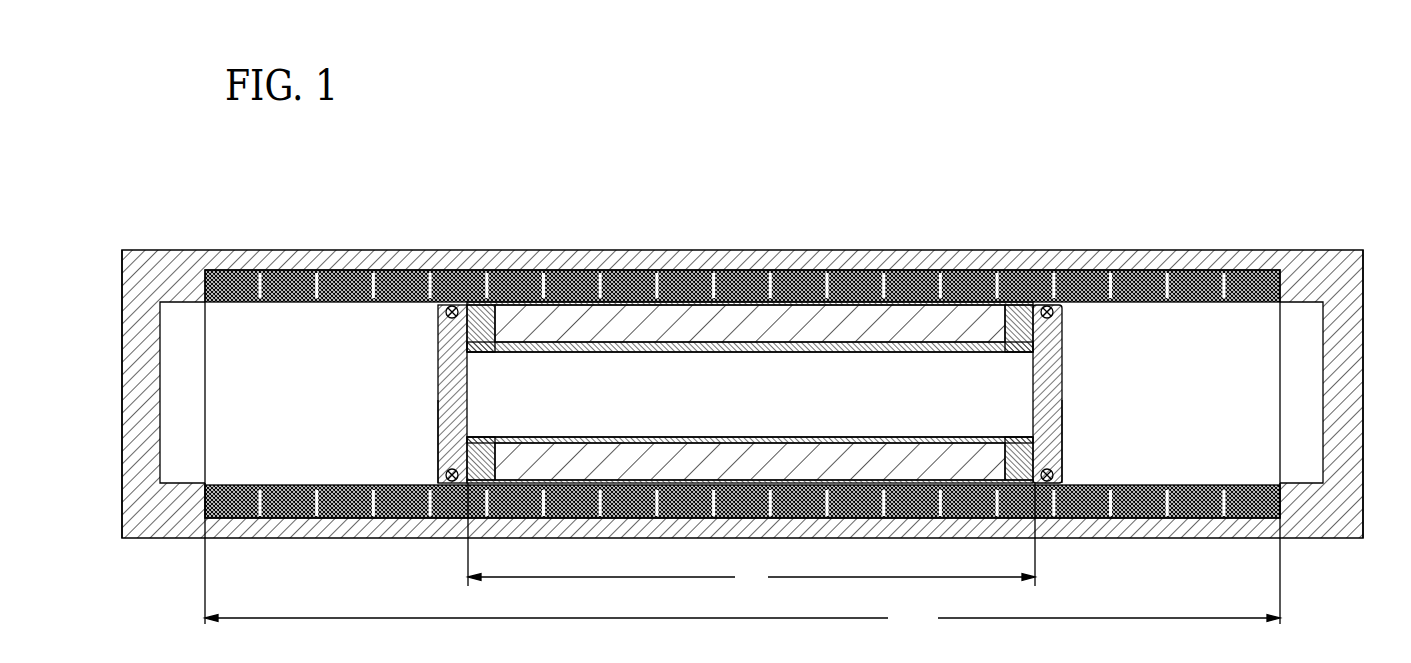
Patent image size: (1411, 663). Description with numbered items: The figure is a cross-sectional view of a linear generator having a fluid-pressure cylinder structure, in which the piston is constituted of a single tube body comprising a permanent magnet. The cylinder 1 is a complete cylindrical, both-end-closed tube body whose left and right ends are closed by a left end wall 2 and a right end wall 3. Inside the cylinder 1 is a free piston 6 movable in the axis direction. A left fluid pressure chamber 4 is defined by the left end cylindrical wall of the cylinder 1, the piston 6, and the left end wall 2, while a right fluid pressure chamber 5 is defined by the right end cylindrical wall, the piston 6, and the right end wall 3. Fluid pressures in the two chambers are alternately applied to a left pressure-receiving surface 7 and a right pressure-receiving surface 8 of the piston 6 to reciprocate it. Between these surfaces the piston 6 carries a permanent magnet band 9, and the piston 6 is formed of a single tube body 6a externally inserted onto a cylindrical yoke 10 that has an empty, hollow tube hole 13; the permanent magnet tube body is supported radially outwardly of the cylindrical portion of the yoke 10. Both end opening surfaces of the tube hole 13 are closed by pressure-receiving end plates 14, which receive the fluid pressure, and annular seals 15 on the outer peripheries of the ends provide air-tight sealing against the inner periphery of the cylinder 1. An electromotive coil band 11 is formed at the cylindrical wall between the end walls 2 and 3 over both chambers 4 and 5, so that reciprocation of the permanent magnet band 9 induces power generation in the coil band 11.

The cylinder 1 is at (1163, 252).
The left end wall 2 is at (140, 396).
The right end wall 3 is at (1358, 390).
The left fluid pressure chamber 4 is at (272, 408).
The right fluid pressure chamber 5 is at (1175, 407).
The piston 6 is at (700, 320).
The single tube body 6a is at (583, 318).
The left pressure-receiving surface 7 is at (438, 352).
The right pressure-receiving surface 8 is at (1063, 360).
The permanent magnet band 9 is at (751, 538).
The cylindrical yoke 10 is at (866, 320).
The electromotive coil band 11 is at (742, 468).
The tube hole 13 is at (943, 377).
The pressure-receiving end plates 14 is at (440, 422).
The annular seals 15 is at (444, 305).